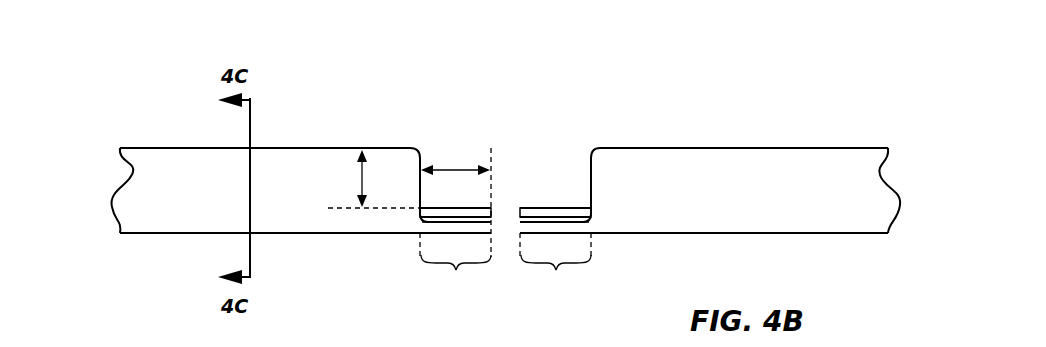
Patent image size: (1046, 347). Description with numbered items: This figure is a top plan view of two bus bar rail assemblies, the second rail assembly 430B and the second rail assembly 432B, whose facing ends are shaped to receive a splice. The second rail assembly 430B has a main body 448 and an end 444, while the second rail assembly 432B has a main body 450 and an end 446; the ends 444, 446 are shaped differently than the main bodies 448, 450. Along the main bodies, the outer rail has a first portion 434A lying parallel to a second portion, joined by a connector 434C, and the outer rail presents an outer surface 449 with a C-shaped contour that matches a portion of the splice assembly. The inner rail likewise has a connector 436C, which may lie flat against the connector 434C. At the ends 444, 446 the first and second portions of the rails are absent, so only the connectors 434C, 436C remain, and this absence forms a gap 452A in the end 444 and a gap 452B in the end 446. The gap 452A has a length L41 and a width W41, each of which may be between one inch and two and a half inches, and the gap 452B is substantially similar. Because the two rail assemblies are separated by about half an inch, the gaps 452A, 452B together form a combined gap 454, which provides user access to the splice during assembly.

The second rail assembly 430B is at (153, 148).
The second rail assembly 432B is at (840, 148).
The first portion 434A is at (215, 148).
The connector 434C is at (435, 233).
The connector 436C is at (440, 207).
The end 444 is at (455, 271).
The end 446 is at (555, 271).
The main body 448 is at (210, 233).
The outer surface 449 is at (167, 208).
The main body 450 is at (845, 233).
The gap 452A is at (474, 140).
The gap 452B is at (553, 150).
The combined gap 454 is at (530, 125).
The width W41 is at (355, 163).
The length L41 is at (453, 167).